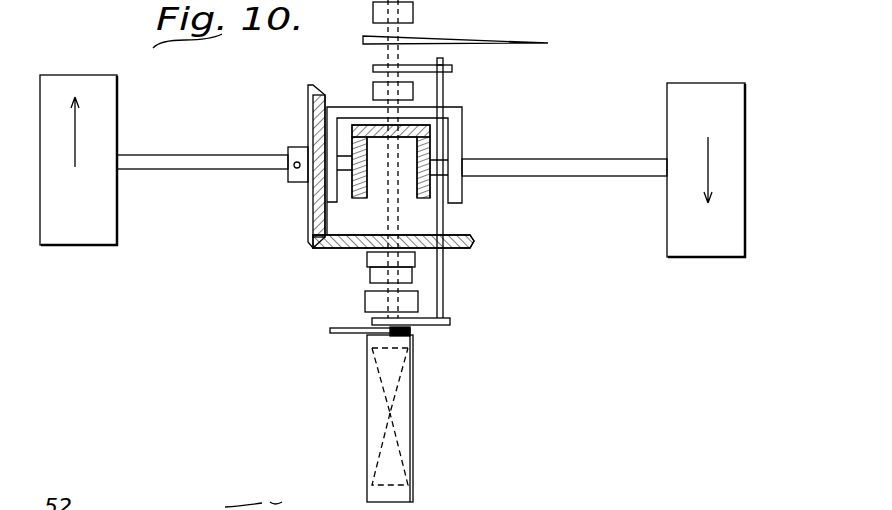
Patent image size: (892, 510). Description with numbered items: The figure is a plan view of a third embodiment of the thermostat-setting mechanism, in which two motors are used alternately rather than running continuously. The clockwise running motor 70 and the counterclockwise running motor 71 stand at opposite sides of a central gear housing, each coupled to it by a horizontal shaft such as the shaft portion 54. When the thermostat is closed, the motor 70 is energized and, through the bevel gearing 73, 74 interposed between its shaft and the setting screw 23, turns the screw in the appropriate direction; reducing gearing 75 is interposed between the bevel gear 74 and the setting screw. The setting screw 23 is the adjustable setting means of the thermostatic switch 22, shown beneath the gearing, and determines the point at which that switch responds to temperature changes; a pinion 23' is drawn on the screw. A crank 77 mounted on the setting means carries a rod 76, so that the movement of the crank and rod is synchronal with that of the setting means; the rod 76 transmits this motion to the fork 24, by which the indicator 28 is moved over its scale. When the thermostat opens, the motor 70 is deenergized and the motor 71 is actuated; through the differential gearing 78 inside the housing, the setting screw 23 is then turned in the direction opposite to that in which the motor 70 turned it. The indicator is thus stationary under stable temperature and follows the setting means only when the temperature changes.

The thermostatic switch 22 is at (412, 443).
The setting screw 23 is at (446, 302).
The pinion 23' is at (448, 342).
The fork 24 is at (452, 70).
The indicator 28 is at (452, 38).
The right-hand portion of rod 54 is at (222, 164).
The clockwise running motor 70 is at (85, 228).
The counterclockwise running motor 71 is at (715, 242).
The bevel gear 73 is at (313, 220).
The bevel gear 74 is at (350, 237).
The reducing gearing 75 is at (373, 300).
The rod 76 is at (443, 288).
The crank 77 is at (450, 323).
The differential gearing 78 is at (406, 177).